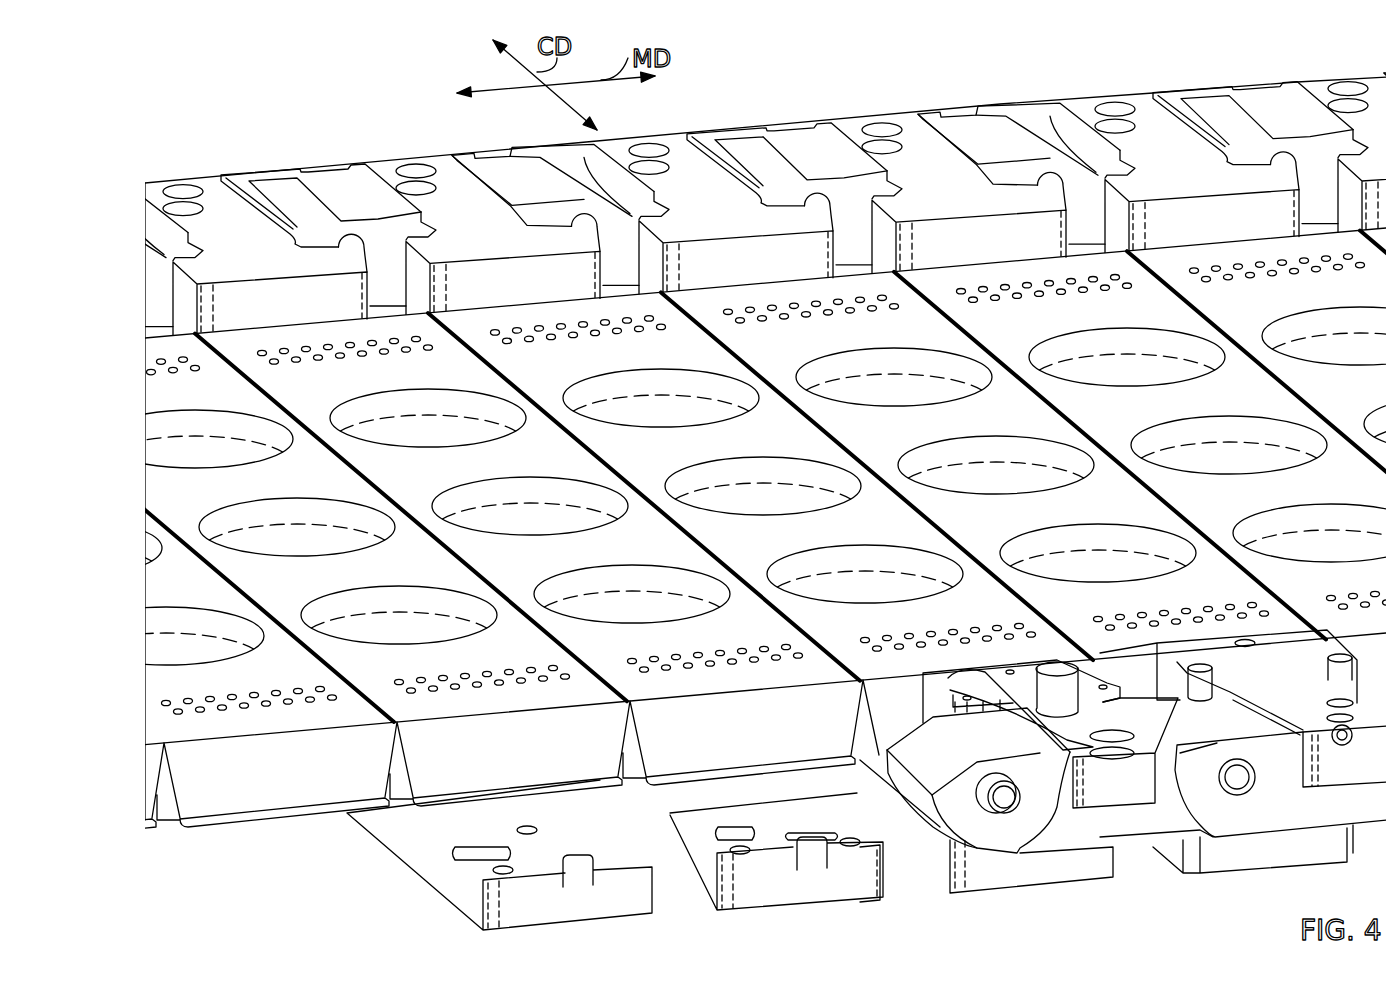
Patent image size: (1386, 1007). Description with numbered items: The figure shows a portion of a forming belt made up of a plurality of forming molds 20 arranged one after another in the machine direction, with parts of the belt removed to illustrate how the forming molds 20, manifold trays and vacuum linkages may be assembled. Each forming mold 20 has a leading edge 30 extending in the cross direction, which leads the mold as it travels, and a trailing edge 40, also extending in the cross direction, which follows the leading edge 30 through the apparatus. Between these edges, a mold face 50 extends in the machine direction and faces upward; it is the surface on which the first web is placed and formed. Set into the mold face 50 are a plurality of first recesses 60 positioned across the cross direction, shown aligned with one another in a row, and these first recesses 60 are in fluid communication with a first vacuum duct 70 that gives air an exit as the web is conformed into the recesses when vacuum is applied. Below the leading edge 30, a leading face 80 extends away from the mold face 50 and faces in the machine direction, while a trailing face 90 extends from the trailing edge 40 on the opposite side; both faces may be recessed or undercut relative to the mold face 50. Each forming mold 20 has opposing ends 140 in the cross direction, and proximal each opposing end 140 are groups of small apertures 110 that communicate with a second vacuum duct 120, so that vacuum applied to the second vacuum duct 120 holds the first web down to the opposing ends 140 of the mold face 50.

The forming mold 20 is at (467, 385).
The leading edge 30 is at (493, 580).
The trailing edge 40 is at (690, 537).
The mold face 50 is at (372, 462).
The first recesses 60 is at (552, 478).
The first vacuum duct 70 is at (948, 678).
The leading face 80 is at (396, 763).
The trailing face 90 is at (637, 750).
The apertures 110 is at (363, 355).
The second vacuum duct 120 is at (1057, 677).
The opposing ends 140 is at (770, 298).